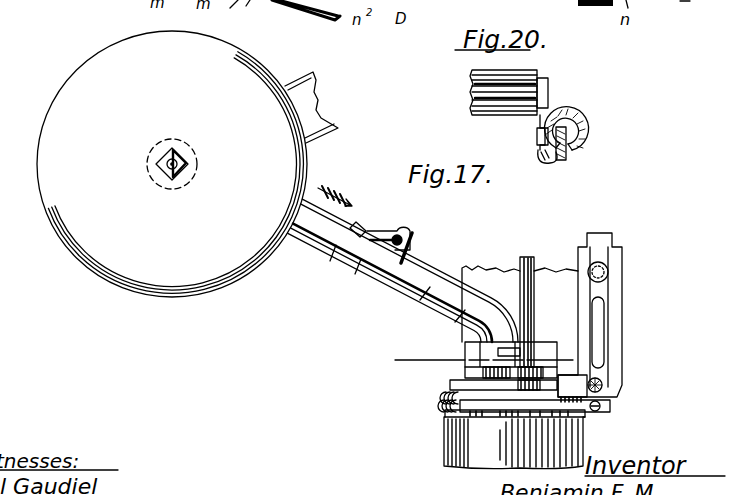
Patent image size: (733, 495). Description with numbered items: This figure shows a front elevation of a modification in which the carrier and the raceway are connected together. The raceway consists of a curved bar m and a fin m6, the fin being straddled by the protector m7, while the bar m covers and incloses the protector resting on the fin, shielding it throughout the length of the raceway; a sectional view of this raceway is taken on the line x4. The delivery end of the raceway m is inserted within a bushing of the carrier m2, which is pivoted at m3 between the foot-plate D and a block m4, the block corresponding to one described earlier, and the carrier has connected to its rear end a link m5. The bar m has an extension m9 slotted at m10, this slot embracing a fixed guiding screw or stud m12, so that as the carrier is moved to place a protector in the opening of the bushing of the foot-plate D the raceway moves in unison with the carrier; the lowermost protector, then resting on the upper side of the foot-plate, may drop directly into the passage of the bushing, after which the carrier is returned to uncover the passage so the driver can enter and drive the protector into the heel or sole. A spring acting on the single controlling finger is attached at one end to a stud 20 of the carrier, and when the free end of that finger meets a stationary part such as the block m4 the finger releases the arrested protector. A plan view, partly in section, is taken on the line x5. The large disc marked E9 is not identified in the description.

In FIG. 17, the disc wheel E9 is at (40, 131).
In FIG. 17, the section line x4 is at (357, 232).
In FIG. 17, the raceway m is at (447, 302).
In FIG. 20, the raceway m is at (576, 130).
In FIG. 17, the extension m9 is at (378, 238).
In FIG. 17, the fixed guiding screw or stud m12 is at (408, 236).
In FIG. 17, the slot m10 is at (417, 246).
In FIG. 17, the block m4 is at (519, 328).
In FIG. 17, the section line x5 is at (483, 354).
In FIG. 17, the stud 20 is at (470, 367).
In FIG. 17, the link m5 is at (526, 352).
In FIG. 17, the pivot m3 is at (530, 363).
In FIG. 17, the carrier m2 is at (628, 336).
In FIG. 17, the foot-plate D is at (460, 403).
In FIG. 20, the protector m7 is at (567, 118).
In FIG. 20, the fin m6 is at (567, 150).